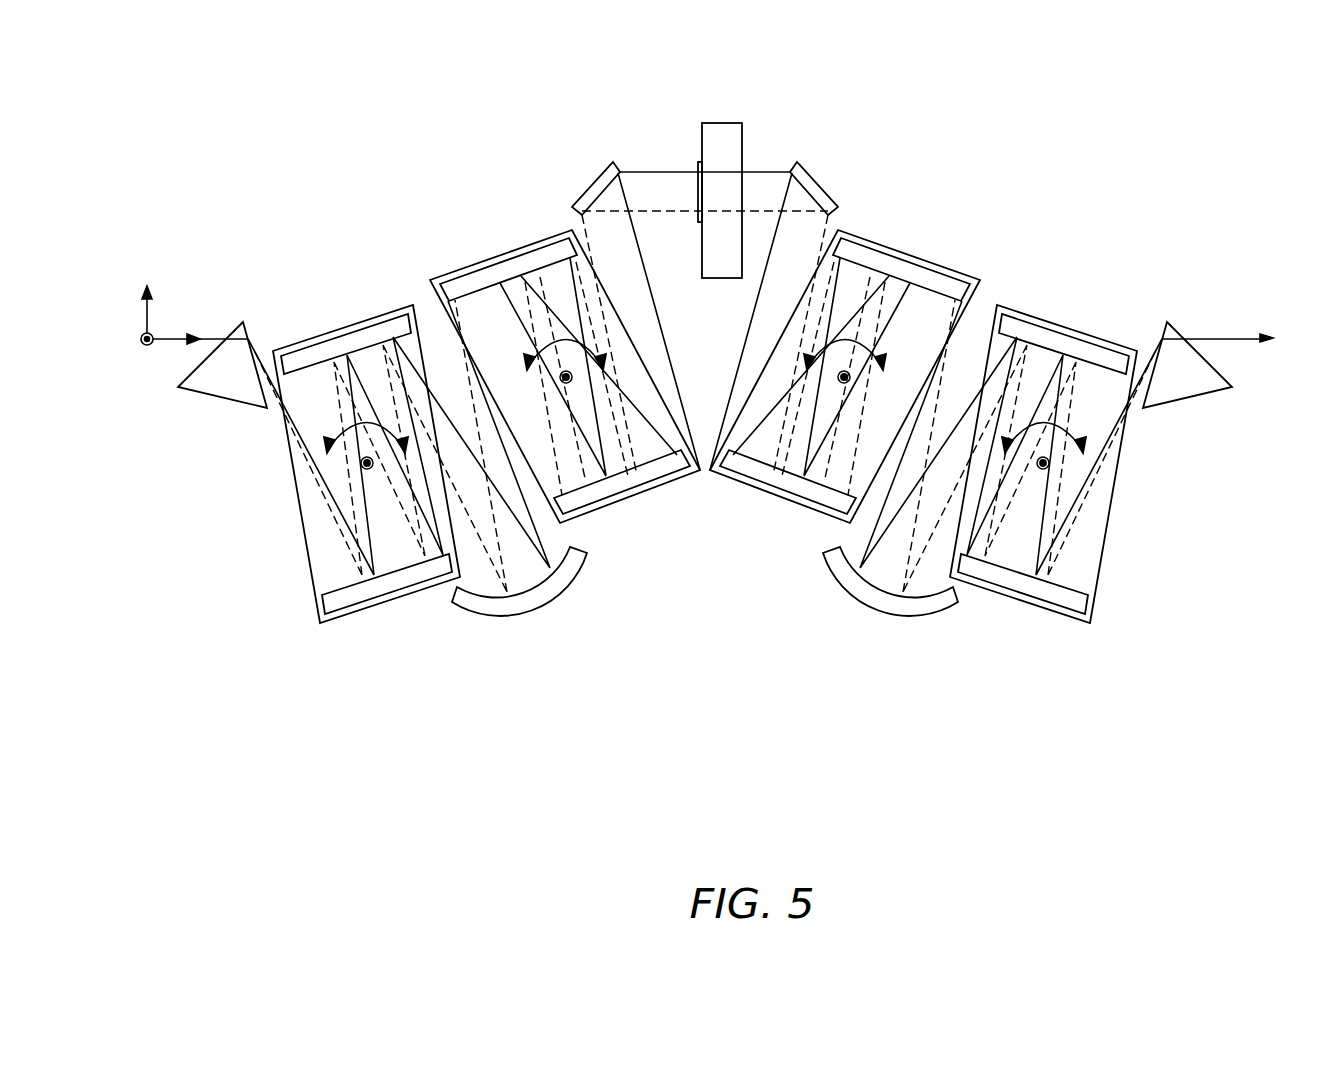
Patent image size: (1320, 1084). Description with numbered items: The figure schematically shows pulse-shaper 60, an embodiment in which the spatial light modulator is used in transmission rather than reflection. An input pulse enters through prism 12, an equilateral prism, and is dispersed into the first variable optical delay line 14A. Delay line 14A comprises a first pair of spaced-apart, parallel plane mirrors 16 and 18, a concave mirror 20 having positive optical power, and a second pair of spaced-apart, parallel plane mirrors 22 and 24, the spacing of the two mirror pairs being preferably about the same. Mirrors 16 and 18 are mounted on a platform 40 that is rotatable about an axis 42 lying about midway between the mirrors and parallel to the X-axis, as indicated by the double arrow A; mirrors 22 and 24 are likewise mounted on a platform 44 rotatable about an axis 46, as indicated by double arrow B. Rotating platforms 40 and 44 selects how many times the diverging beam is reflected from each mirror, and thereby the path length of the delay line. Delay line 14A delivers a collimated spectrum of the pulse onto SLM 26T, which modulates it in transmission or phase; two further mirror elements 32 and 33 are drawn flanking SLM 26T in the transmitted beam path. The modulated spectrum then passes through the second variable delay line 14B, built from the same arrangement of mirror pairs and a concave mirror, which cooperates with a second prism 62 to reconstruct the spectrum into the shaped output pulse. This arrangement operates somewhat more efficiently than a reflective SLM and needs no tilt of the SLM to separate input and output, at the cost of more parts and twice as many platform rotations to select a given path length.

The prism 12 is at (242, 410).
The delay line 14A is at (526, 641).
The delay line 14B is at (907, 646).
The plane mirror 16 is at (347, 581).
The plane mirror 18 is at (360, 345).
The concave mirror 20 is at (589, 560).
The plane mirror 22 is at (483, 287).
The plane mirror 24 is at (662, 487).
The SLM 26T is at (697, 172).
The fold mirror 32 is at (602, 190).
The fold mirror 33 is at (810, 188).
The platform 40 is at (322, 455).
The axis 42 is at (362, 466).
The platform 44 is at (561, 395).
The axis 46 is at (572, 380).
The pulse-shaper 60 is at (840, 792).
The prism 62 is at (1168, 410).